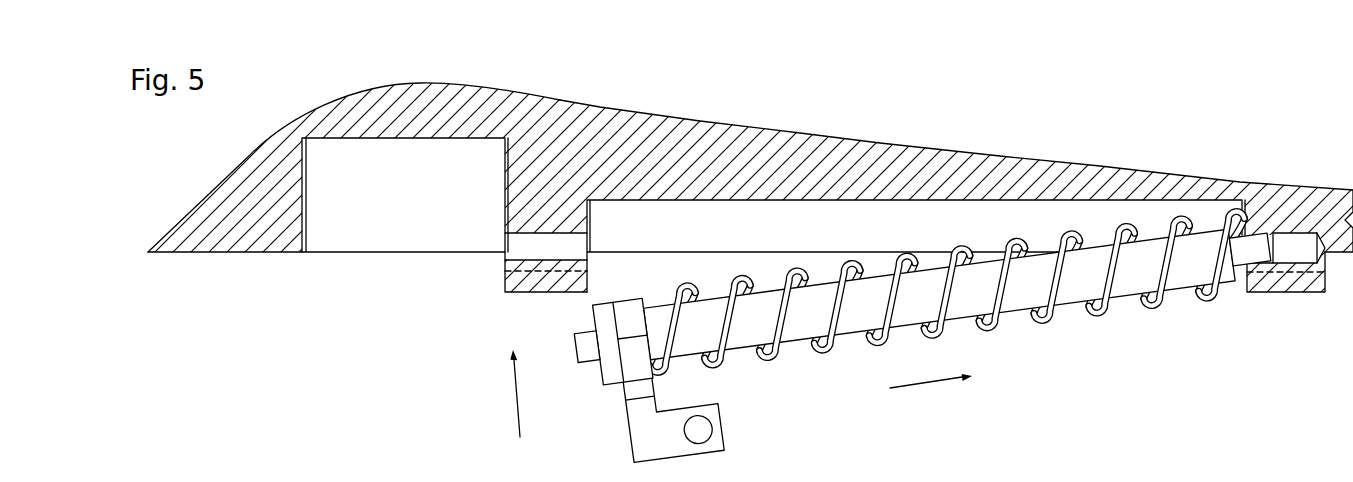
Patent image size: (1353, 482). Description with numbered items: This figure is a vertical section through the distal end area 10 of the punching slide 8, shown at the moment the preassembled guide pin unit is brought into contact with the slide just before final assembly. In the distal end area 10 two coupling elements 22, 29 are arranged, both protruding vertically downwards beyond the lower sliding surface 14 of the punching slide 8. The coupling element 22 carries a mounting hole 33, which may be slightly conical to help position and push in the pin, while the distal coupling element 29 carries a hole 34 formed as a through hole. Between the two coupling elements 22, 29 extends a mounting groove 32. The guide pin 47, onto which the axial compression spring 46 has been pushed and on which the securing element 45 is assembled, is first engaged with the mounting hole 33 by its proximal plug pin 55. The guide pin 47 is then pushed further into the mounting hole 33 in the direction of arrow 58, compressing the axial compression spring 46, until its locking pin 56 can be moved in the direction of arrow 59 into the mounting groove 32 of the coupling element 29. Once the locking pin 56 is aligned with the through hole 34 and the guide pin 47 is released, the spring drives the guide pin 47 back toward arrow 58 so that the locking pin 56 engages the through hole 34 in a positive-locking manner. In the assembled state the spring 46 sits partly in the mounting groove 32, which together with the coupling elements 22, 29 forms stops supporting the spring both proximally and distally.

The punching slide 8 is at (992, 159).
The distal end area 10 is at (556, 108).
The lower sliding surface 14 is at (322, 254).
The coupling element 22 is at (1297, 300).
The coupling element 29 is at (503, 284).
The mounting groove 32 is at (800, 227).
The mounting hole 33 is at (1295, 242).
The through hole 34 is at (573, 247).
The securing element 45 is at (637, 428).
The axial compression spring 46 is at (983, 325).
The guide pin 47 is at (1129, 285).
The plug pin 55 is at (1258, 240).
The locking pin 56 is at (585, 347).
The arrow 58 is at (927, 388).
The arrow 59 is at (515, 402).